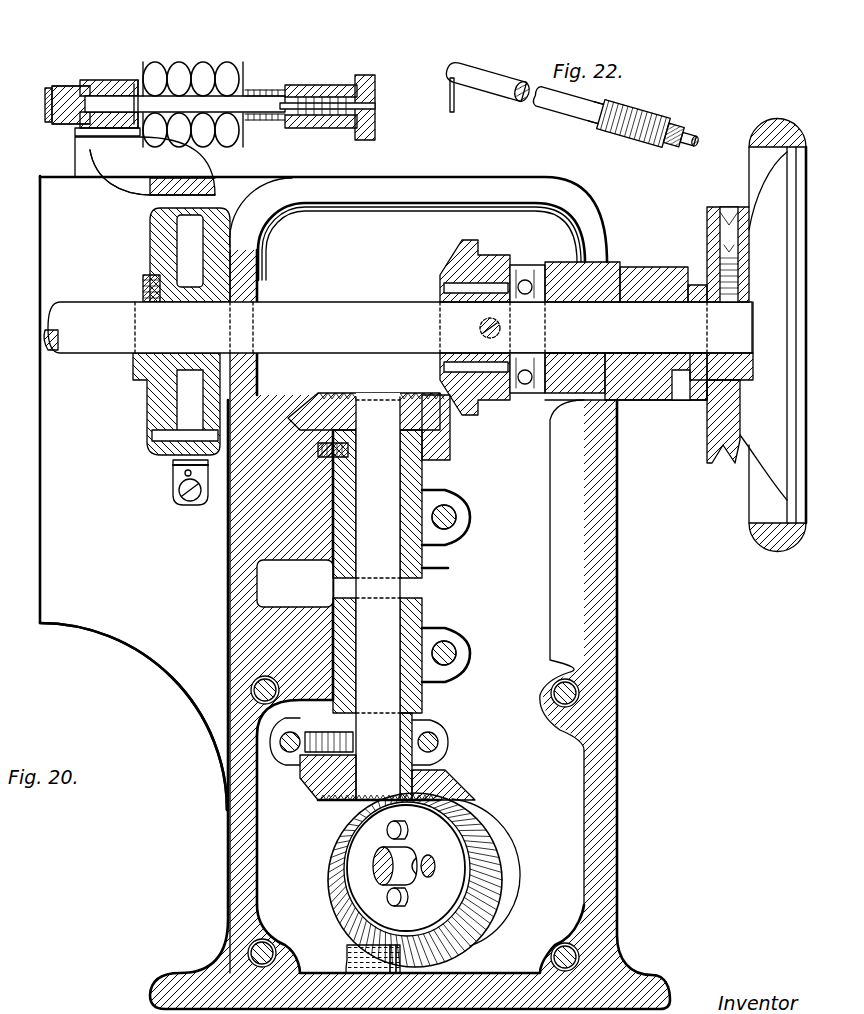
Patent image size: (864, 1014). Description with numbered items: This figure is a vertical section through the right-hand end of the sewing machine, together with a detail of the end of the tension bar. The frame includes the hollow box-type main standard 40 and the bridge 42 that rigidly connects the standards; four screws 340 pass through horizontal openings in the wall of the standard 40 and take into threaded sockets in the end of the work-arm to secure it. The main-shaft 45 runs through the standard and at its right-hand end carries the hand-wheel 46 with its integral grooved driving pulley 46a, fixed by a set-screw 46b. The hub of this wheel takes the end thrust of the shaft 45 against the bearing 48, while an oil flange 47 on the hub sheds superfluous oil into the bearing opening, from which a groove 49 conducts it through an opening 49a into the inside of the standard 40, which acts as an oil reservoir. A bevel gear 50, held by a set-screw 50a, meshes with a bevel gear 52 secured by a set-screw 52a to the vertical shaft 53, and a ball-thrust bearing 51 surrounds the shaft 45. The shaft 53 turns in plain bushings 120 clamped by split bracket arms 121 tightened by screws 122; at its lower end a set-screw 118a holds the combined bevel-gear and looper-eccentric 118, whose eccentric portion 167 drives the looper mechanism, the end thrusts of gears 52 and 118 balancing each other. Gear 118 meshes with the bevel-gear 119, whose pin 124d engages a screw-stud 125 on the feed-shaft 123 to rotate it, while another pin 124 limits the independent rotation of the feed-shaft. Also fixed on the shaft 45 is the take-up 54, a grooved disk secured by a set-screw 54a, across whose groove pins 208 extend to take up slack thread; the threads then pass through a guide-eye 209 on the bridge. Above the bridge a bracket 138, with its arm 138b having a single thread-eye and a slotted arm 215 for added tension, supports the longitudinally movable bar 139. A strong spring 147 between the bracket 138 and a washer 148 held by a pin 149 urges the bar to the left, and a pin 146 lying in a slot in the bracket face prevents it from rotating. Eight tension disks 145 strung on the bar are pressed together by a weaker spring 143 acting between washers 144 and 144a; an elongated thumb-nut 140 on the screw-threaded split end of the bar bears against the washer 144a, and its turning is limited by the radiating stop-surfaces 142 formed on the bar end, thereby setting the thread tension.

In FIG. 20, the main standard 40 is at (355, 573).
In FIG. 20, the bridge 42 is at (60, 630).
In FIG. 20, the main-shaft 45 is at (330, 312).
In FIG. 20, the hand-wheel 46 is at (775, 552).
In FIG. 20, the grooved driving pulley 46a is at (714, 465).
In FIG. 20, the set-screw 46b is at (727, 252).
In FIG. 20, the oil flange 47 is at (700, 385).
In FIG. 20, the bearing 48 is at (672, 255).
In FIG. 20, the groove 49 is at (640, 400).
In FIG. 20, the opening 49a is at (560, 398).
In FIG. 20, the bevel gear 50 is at (440, 270).
In FIG. 20, the set-screw 50a is at (478, 328).
In FIG. 20, the ball-thrust bearing 51 is at (520, 400).
In FIG. 20, the bevel gear 52 is at (355, 390).
In FIG. 20, the set-screw 52a is at (318, 452).
In FIG. 20, the vertical shaft 53 is at (440, 472).
In FIG. 20, the take-up 54 is at (160, 425).
In FIG. 20, the set-screw 54a is at (140, 280).
In FIG. 20, the combined bevel-gear and looper-eccentric 118 is at (305, 790).
In FIG. 20, the set-screw 118a is at (280, 760).
In FIG. 20, the bevel-gear 119 is at (470, 940).
In FIG. 20, the bushing 120 is at (455, 632).
In FIG. 20, the bracket arm 121 is at (483, 650).
In FIG. 20, the screw 122 is at (476, 672).
In FIG. 20, the feed-shaft 123 is at (378, 868).
In FIG. 20, the pin 124 is at (435, 870).
In FIG. 20, the pin 124d is at (455, 778).
In FIG. 20, the screw-stud 125 is at (408, 830).
In FIG. 20, the bracket 138 is at (105, 80).
In FIG. 20, the arm 138b is at (125, 195).
In FIG. 20, the bar 139 is at (170, 104).
In FIG. 22, the bar 139 is at (520, 103).
In FIG. 20, the thumb-nut 140 is at (388, 70).
In FIG. 20, the stop-surfaces 142 is at (390, 104).
In FIG. 22, the stop-surfaces 142 is at (644, 126).
In FIG. 20, the spring 143 is at (262, 88).
In FIG. 20, the washer 144 is at (245, 130).
In FIG. 20, the washer 144a is at (285, 90).
In FIG. 20, the tension disks 145 is at (240, 45).
In FIG. 20, the pin 146 is at (138, 88).
In FIG. 20, the spring 147 is at (90, 82).
In FIG. 20, the washer 148 is at (62, 84).
In FIG. 20, the pin 149 is at (40, 82).
In FIG. 22, the pin 149 is at (452, 112).
In FIG. 20, the eccentric portion 167 is at (440, 728).
In FIG. 20, the pin 208 is at (160, 462).
In FIG. 20, the guide-eye 209 is at (180, 500).
In FIG. 20, the arm 215 is at (72, 132).
In FIG. 20, the screws 340 is at (620, 932).